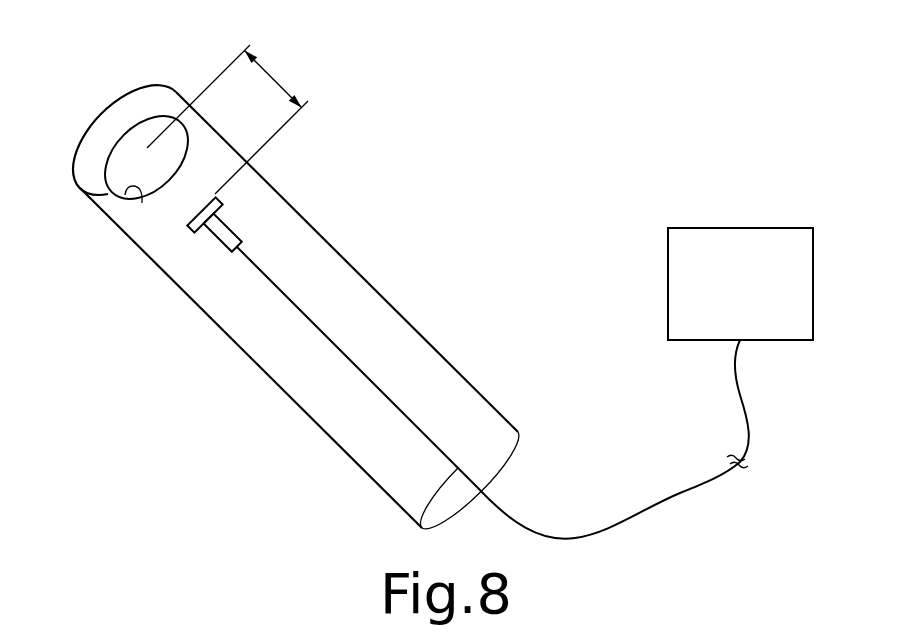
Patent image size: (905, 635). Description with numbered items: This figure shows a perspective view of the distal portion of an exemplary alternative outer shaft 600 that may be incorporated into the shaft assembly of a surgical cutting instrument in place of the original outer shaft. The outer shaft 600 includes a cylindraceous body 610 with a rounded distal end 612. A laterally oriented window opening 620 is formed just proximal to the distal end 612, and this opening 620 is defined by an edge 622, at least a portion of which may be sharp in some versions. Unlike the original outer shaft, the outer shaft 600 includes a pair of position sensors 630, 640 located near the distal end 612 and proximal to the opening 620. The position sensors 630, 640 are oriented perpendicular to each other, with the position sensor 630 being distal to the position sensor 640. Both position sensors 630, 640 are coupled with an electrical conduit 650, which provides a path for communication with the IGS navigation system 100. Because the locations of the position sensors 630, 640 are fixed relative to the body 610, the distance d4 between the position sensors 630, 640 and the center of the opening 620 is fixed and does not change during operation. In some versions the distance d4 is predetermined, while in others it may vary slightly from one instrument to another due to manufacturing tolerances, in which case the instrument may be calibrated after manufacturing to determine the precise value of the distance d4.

The IGS navigation system 100 is at (766, 301).
The outer shaft 600 is at (414, 190).
The cylindraceous body 610 is at (380, 296).
The rounded distal end 612 is at (143, 93).
The window opening 620 is at (205, 123).
The edge 622 is at (142, 203).
The position sensor 630 is at (213, 210).
The position sensor 640 is at (224, 238).
The electrical conduit 650 is at (272, 283).
The distance d4 is at (273, 79).